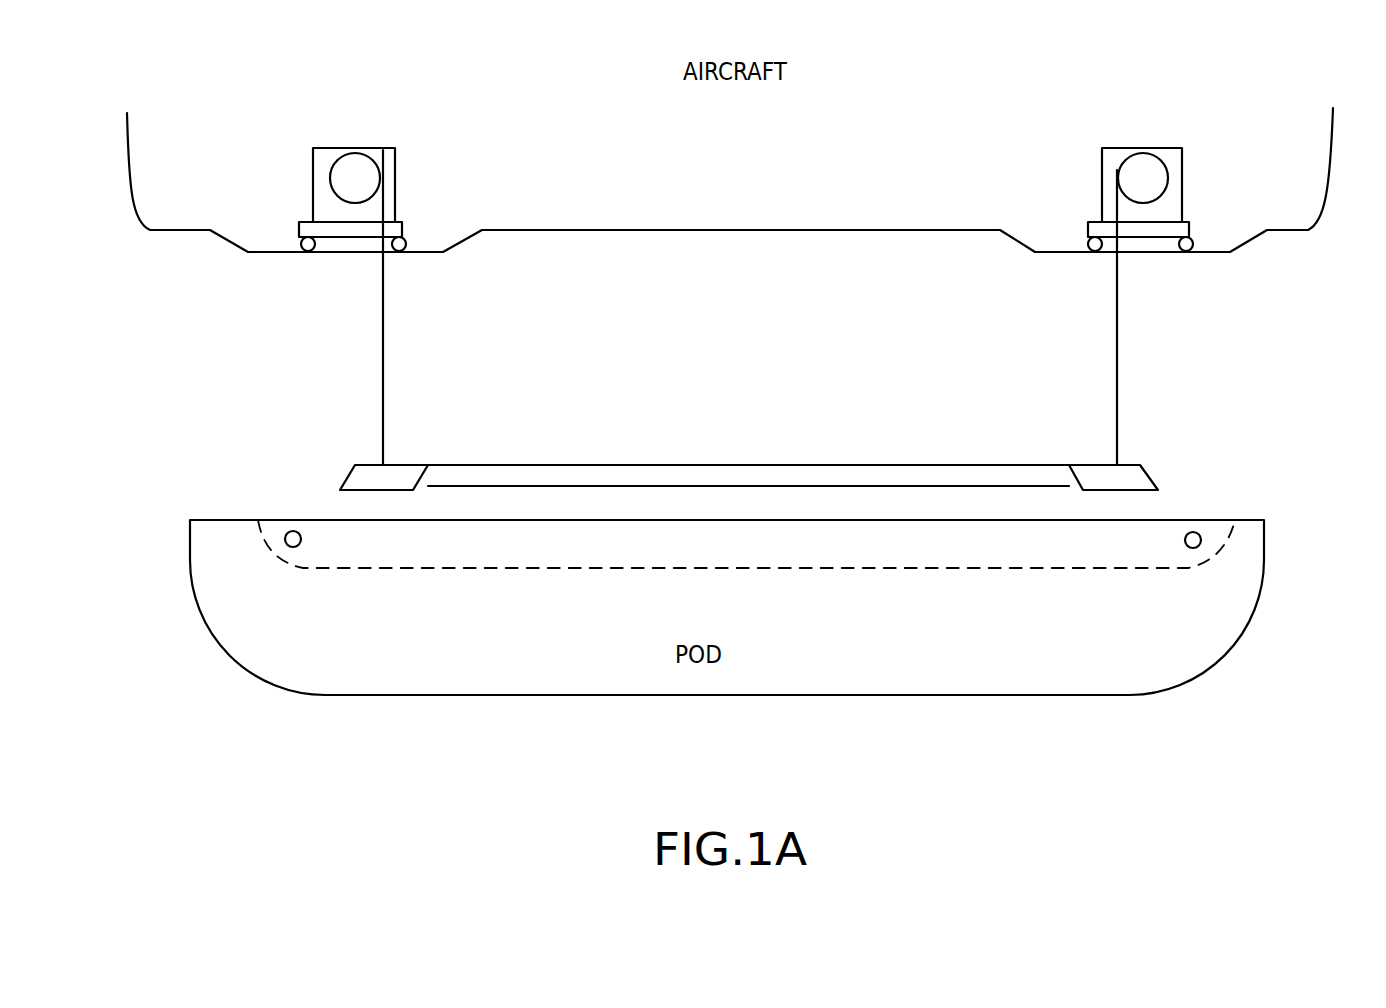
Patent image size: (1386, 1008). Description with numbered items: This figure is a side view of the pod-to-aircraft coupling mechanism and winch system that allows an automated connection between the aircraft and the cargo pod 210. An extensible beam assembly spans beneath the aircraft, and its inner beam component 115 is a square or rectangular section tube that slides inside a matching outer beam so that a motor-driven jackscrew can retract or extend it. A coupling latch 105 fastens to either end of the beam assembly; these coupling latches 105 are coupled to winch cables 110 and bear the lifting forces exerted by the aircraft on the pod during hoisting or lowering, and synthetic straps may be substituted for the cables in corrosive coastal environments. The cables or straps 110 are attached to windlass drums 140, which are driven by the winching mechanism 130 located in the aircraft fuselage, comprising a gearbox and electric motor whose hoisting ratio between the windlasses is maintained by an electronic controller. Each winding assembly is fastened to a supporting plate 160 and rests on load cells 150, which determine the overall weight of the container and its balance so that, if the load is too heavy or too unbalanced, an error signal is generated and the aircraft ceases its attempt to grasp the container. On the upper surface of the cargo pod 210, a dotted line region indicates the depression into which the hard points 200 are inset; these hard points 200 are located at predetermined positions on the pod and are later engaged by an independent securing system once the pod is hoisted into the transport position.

The coupling latch 105 is at (367, 472).
The winch cable 110 is at (383, 357).
The inner beam component 115 is at (863, 467).
The winching mechanism 130 is at (395, 182).
The windlass drum 140 is at (362, 168).
The load cell 150 is at (307, 247).
The supporting plate 160 is at (402, 223).
The hard point 200 is at (286, 544).
The cargo pod 210 is at (746, 564).